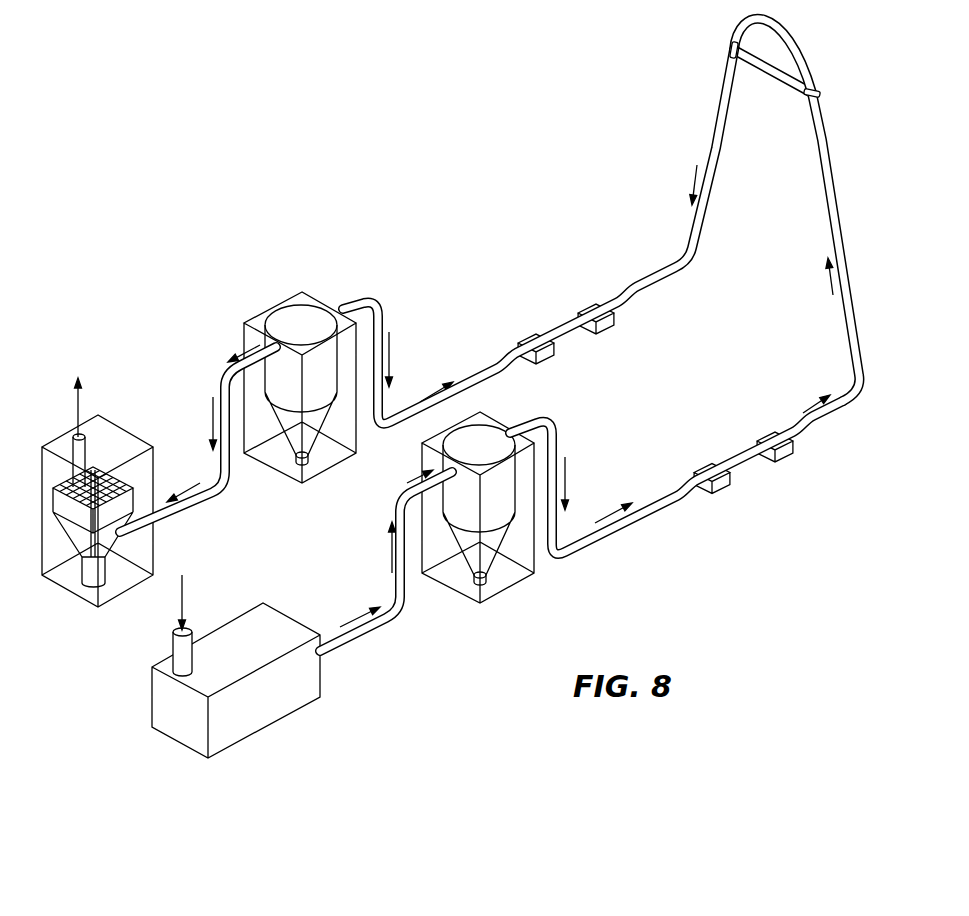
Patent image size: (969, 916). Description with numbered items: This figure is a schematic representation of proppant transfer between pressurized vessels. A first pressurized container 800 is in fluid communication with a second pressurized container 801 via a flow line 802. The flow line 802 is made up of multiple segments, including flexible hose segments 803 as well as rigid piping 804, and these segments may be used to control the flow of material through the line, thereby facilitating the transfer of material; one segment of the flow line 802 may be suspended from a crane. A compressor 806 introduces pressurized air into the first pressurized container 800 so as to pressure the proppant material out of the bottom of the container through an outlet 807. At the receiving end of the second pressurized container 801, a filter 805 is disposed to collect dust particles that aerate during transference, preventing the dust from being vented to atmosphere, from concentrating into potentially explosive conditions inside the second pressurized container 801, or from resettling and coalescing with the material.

The first pressurized container 800 is at (467, 582).
The second pressurized container 801 is at (313, 479).
The flow line 802 is at (835, 241).
The flexible hose segments 803 is at (625, 525).
The rigid piping 804 is at (568, 323).
The filter 805 is at (113, 433).
The compressor 806 is at (312, 672).
The outlet 807 is at (510, 592).